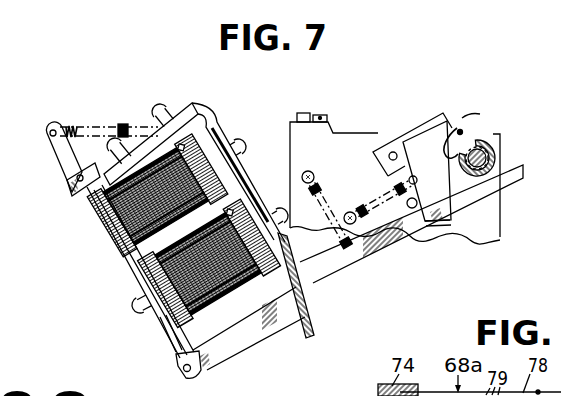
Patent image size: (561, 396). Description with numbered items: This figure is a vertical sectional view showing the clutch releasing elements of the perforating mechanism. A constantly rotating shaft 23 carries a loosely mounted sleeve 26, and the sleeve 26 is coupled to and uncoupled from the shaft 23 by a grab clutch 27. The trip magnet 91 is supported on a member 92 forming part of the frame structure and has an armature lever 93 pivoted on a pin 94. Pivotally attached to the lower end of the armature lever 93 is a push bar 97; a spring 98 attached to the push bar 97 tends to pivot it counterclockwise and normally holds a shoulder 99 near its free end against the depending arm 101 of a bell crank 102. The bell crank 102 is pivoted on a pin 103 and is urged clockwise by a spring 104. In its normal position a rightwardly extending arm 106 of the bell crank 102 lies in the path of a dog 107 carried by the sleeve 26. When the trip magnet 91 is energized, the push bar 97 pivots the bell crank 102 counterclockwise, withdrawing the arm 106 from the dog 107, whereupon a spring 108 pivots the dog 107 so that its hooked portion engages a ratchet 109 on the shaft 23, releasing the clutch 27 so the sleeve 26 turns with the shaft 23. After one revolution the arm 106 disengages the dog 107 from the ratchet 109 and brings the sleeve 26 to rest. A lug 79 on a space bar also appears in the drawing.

The lug 79 is at (73, 128).
The pin 94 is at (77, 183).
The armature lever 93 is at (107, 232).
The trip magnet 91 is at (165, 268).
The push bar 97 is at (238, 342).
The member 92 is at (313, 327).
The shoulder 99 is at (422, 238).
The spring 98 is at (318, 185).
The spring 104 is at (371, 201).
The bell crank 102 is at (380, 134).
The pin 103 is at (396, 150).
The rightwardly extending arm 106 is at (460, 131).
The dog 107 is at (465, 117).
The grab clutch 27 is at (480, 127).
The spring 108 is at (449, 157).
The ratchet 109 is at (505, 137).
The shaft 23 is at (484, 155).
The sleeve 26 is at (508, 183).
The depending arm 101 is at (427, 196).